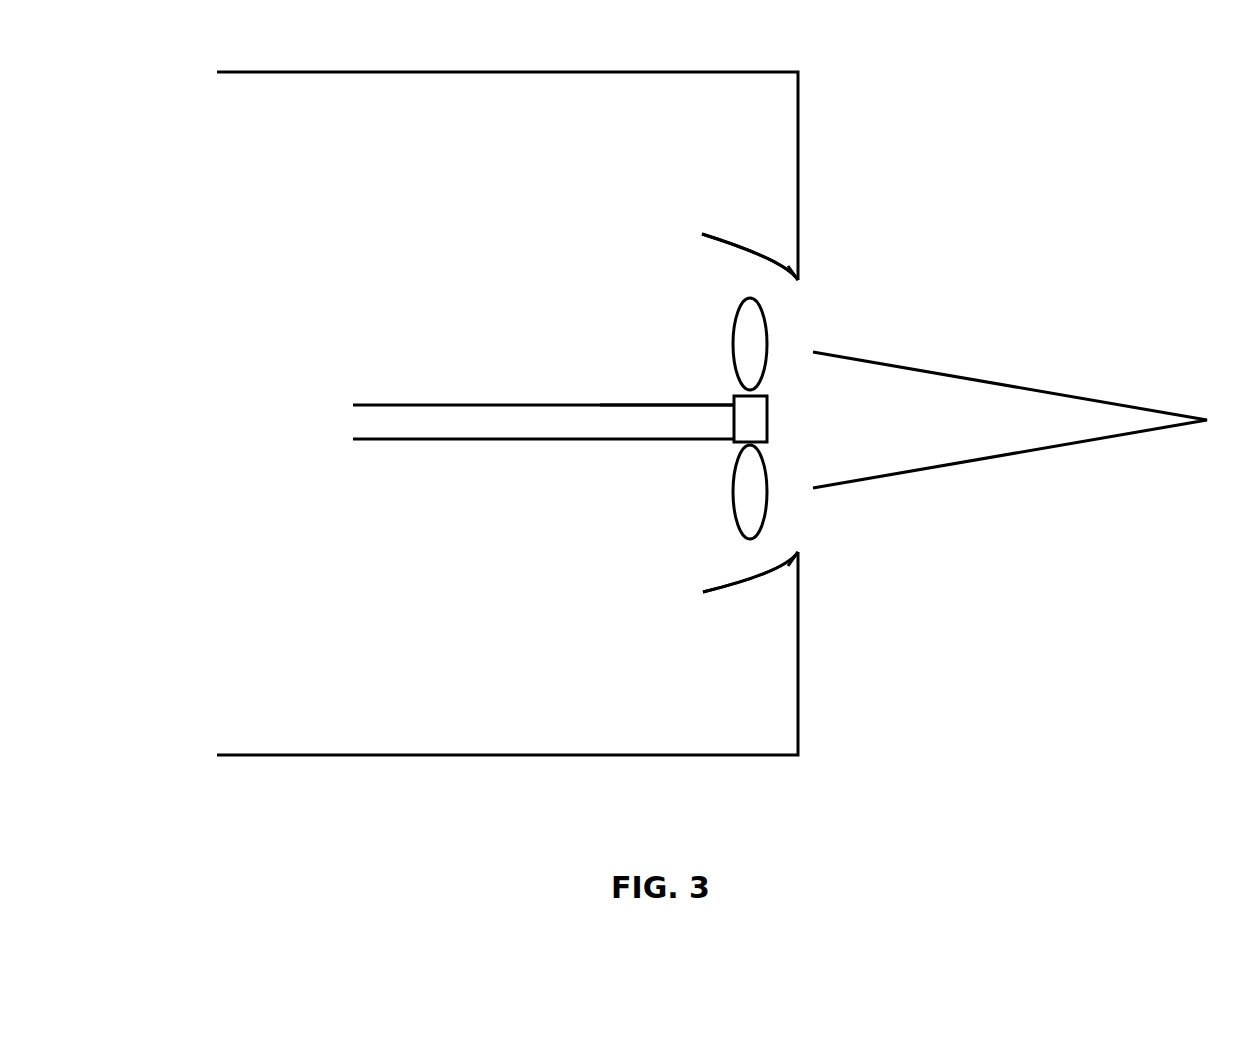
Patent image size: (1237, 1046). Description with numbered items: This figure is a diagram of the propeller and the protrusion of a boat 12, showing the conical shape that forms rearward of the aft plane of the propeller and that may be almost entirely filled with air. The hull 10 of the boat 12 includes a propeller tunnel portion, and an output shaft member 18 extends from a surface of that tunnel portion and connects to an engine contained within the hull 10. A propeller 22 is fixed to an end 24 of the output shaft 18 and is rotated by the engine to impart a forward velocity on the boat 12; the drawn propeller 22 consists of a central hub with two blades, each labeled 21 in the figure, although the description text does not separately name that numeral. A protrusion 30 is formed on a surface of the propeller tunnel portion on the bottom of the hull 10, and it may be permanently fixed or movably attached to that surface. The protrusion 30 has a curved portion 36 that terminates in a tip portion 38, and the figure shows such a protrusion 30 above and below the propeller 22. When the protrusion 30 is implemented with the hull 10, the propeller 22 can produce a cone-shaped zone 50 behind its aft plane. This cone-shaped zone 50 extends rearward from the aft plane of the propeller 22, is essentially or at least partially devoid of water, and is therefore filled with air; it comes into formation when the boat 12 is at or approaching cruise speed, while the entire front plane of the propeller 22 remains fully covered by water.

The hull 10 is at (543, 630).
The boat 12 is at (290, 569).
The output shaft member 18 is at (465, 422).
The propeller blade 21 is at (757, 345).
The propeller 22 is at (737, 414).
The end 24 is at (665, 423).
The protrusion 30 is at (812, 267).
The curved portion 36 is at (742, 241).
The tip portion 38 is at (800, 281).
The cone-shaped zone 50 is at (970, 397).